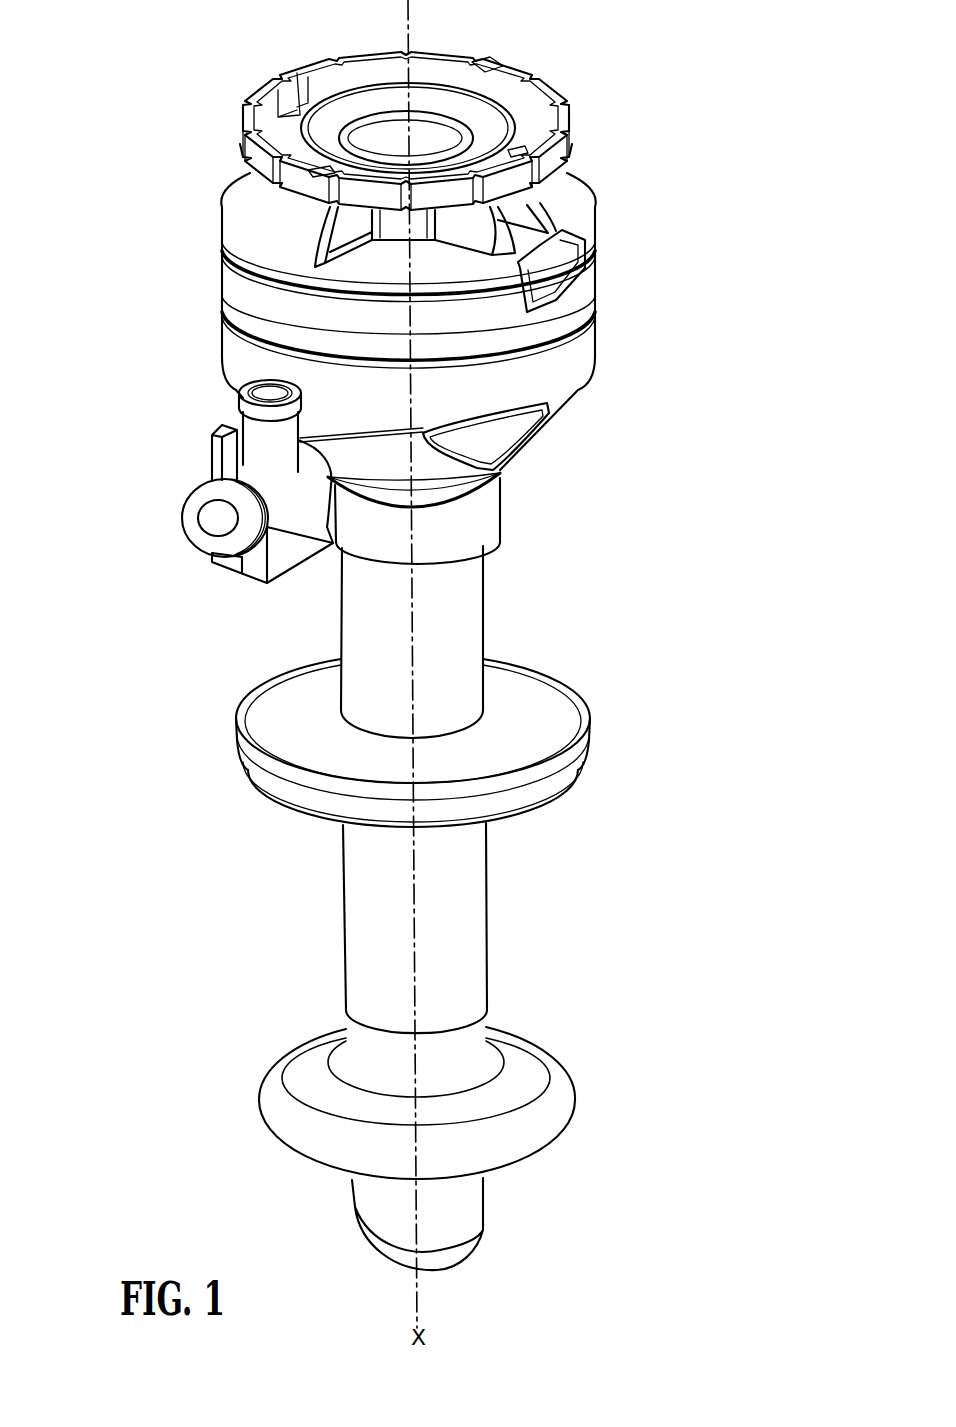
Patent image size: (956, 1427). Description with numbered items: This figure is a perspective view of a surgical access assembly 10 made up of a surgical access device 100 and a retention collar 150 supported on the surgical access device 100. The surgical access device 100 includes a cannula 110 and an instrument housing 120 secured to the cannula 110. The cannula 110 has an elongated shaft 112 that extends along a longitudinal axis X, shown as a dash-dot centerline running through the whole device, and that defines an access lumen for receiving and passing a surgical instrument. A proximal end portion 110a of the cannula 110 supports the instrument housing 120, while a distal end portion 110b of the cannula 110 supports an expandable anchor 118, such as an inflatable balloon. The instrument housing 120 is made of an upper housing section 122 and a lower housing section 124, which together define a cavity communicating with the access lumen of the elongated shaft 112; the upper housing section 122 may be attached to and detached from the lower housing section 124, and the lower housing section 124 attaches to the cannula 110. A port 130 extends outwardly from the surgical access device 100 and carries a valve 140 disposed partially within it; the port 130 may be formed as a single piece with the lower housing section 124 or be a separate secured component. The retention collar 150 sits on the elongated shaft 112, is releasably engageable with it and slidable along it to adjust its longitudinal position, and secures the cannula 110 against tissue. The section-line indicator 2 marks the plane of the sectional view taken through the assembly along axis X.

The surgical access assembly 10 is at (195, 60).
The surgical access device 100 is at (95, 225).
The cannula 110 is at (525, 870).
The proximal end portion of the cannula 110a is at (540, 498).
The distal end portion of the cannula 110b is at (588, 1130).
The elongated shaft 112 is at (480, 588).
The expandable anchor 118 is at (543, 1043).
The instrument housing 120 is at (630, 292).
The upper housing section 122 is at (220, 255).
The lower housing section 124 is at (220, 330).
The port 130 is at (173, 437).
The valve 140 is at (167, 495).
The retention collar 150 is at (190, 697).
The section line 2- 2 is at (410, 23).